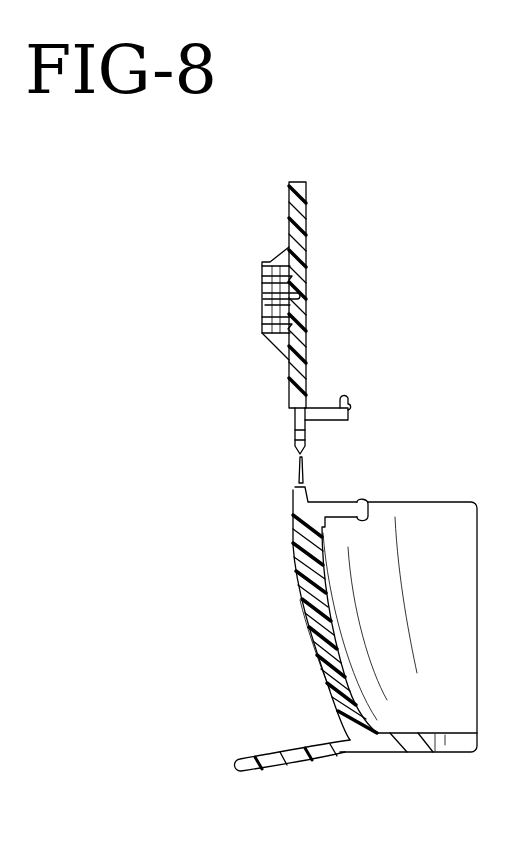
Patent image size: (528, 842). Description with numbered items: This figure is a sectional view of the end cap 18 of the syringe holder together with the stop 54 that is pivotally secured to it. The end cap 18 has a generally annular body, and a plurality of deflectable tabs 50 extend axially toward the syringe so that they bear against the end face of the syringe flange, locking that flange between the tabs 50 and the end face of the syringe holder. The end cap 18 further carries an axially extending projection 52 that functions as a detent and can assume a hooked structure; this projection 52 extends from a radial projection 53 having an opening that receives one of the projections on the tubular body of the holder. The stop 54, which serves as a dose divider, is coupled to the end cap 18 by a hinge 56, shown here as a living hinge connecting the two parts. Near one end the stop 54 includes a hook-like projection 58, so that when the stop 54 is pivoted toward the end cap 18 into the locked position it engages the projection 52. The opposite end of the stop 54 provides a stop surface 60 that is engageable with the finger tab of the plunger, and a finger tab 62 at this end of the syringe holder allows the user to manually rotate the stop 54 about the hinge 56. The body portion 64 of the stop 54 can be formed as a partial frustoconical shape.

The end cap 18 is at (280, 186).
The deflectable tabs 50 is at (264, 260).
The axially extending projection 52 is at (349, 405).
The radial projection 53 is at (294, 424).
The stop 54 is at (306, 609).
The hinge 56 is at (298, 480).
The hook-like projection 58 is at (366, 500).
The stop surface 60 is at (410, 752).
The finger tab 62 is at (238, 762).
The body portion 64 is at (318, 655).